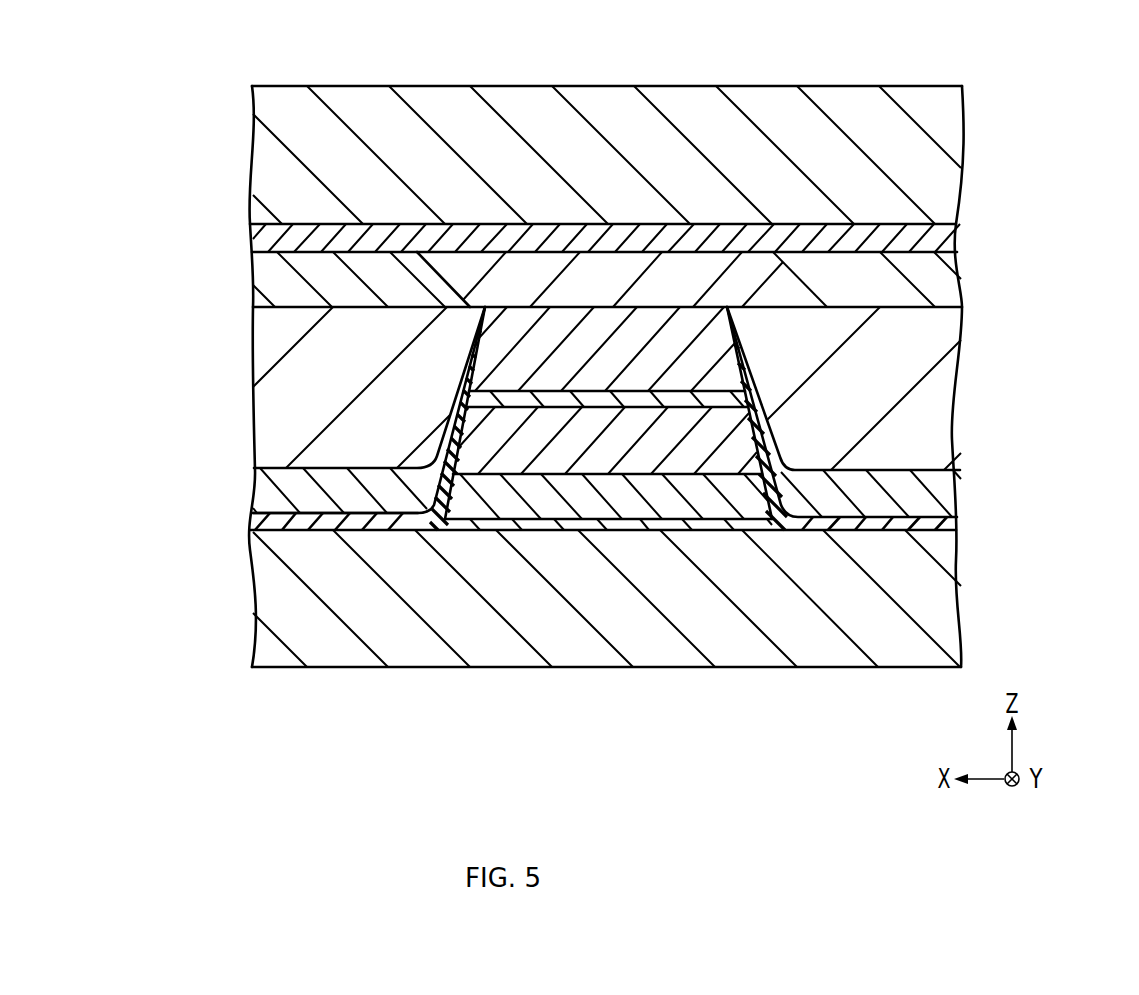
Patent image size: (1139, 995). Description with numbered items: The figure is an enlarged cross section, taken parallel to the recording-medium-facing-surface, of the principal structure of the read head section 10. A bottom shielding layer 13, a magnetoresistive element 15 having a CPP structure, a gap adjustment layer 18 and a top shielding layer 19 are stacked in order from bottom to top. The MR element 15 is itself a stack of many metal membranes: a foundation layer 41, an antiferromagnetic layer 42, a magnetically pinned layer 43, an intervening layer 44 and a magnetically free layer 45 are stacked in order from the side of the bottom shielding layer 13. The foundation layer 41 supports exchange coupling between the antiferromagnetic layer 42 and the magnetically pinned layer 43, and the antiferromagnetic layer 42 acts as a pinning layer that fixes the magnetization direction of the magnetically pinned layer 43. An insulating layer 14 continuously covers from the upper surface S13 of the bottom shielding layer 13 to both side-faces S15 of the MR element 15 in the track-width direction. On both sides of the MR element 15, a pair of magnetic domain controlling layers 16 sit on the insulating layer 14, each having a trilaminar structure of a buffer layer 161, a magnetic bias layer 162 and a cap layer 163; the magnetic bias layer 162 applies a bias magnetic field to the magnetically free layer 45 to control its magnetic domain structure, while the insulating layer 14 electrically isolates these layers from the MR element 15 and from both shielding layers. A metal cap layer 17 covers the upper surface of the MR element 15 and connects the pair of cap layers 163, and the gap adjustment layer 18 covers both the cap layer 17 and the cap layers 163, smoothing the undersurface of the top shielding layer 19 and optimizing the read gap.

The read head section 10 is at (1044, 67).
The bottom shielding layer 13 is at (959, 594).
The insulating layer 14 is at (252, 522).
The magnetoresistive element 15 is at (608, 539).
The magnetic domain controlling layer 16 is at (631, 384).
The cap layer 17 is at (447, 264).
The gap adjustment layer 18 is at (958, 236).
The top shielding layer 19 is at (960, 134).
The foundation layer 41 is at (728, 722).
The antiferromagnetic layer 42 is at (543, 495).
The magnetically pinned layer 43 is at (600, 437).
The intervening layer 44 is at (650, 397).
The magnetically free layer 45 is at (707, 343).
The buffer layer 161 is at (261, 484).
The magnetic bias layer 162 is at (261, 420).
The cap layer 163 is at (261, 289).
The upper surface of the bottom shielding layer S13 is at (307, 519).
The side-face of the MR element S15 is at (449, 434).